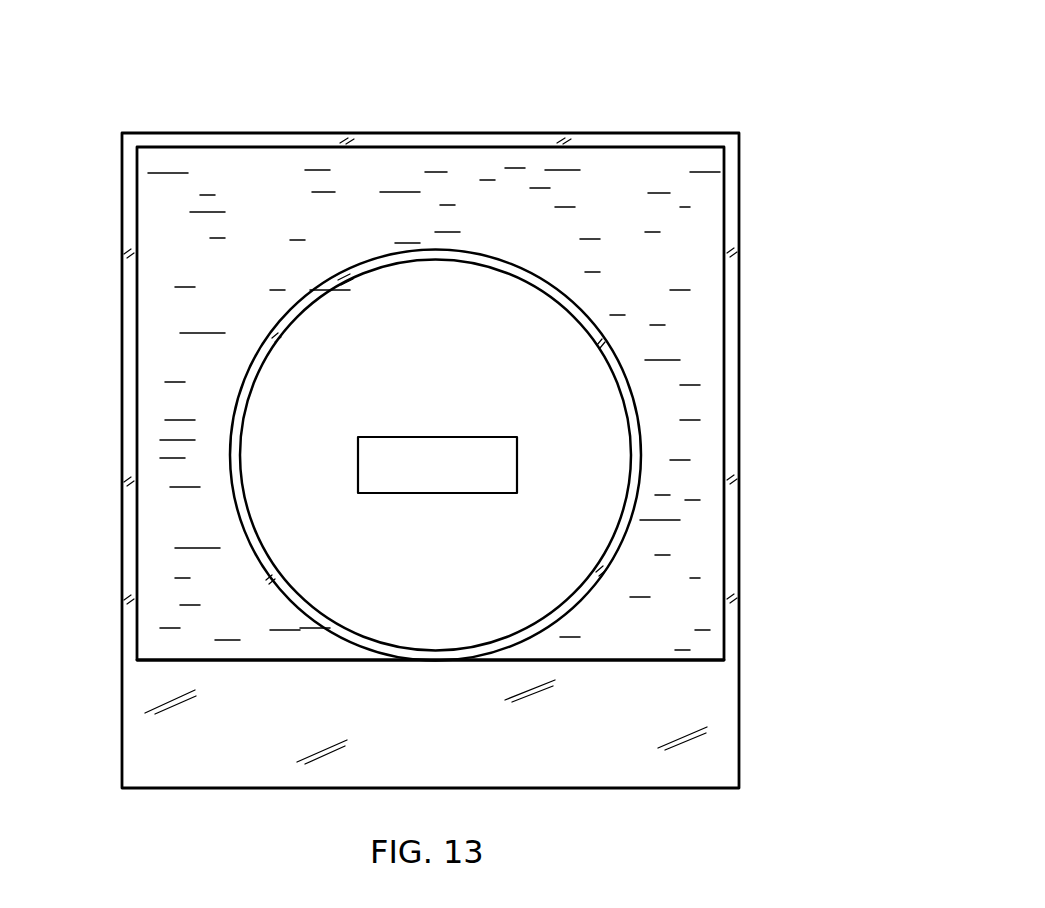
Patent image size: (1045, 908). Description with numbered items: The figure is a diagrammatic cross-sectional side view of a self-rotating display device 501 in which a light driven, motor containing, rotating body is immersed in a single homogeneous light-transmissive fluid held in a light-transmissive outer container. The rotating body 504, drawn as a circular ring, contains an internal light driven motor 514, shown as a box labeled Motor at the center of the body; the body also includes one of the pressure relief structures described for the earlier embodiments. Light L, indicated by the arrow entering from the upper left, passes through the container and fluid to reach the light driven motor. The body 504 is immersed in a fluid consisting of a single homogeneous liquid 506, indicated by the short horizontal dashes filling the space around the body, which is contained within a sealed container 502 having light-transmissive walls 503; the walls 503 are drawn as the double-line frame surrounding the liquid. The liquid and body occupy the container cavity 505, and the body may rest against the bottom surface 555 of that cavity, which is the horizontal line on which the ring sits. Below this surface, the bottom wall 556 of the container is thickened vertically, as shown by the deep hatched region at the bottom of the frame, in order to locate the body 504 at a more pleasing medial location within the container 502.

The self-rotating display device 501 is at (824, 118).
The sealed container 502 is at (741, 200).
The light-transmissive walls 503 is at (617, 137).
The rotating body 504 is at (591, 316).
The container cavity 505 is at (176, 263).
The single homogeneous liquid 506 is at (647, 221).
The internal light driven motor 514 is at (490, 437).
The bottom surface 555 is at (626, 660).
The bottom wall 556 is at (725, 712).
The light L is at (340, 341).